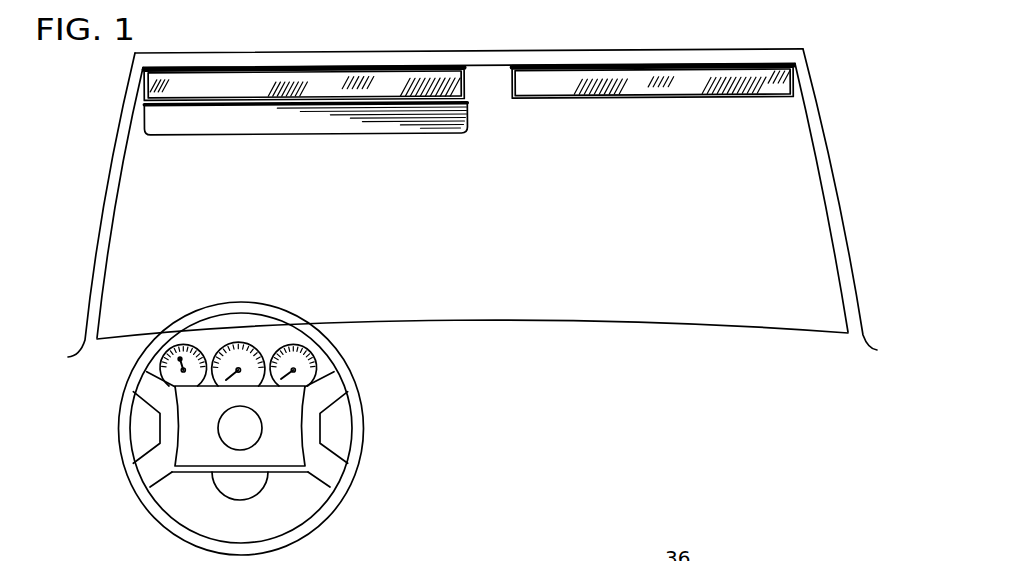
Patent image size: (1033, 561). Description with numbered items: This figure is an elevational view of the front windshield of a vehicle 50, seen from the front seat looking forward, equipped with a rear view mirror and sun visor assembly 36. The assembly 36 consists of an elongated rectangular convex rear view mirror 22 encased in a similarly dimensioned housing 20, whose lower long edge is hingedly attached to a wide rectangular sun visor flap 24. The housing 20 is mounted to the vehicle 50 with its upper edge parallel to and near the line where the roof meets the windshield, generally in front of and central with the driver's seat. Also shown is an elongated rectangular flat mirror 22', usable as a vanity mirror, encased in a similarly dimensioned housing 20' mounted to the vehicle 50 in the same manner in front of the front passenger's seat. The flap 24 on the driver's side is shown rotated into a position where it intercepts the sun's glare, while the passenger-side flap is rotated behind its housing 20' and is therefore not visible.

The housing 20 is at (306, 59).
The housing 20' is at (653, 74).
The convex rear view mirror 22 is at (304, 58).
The flat mirror 22' is at (652, 107).
The sun visor flap 24 is at (212, 123).
The rear view mirror and sun visor assembly 36 is at (316, 139).
The vehicle 50 is at (497, 50).